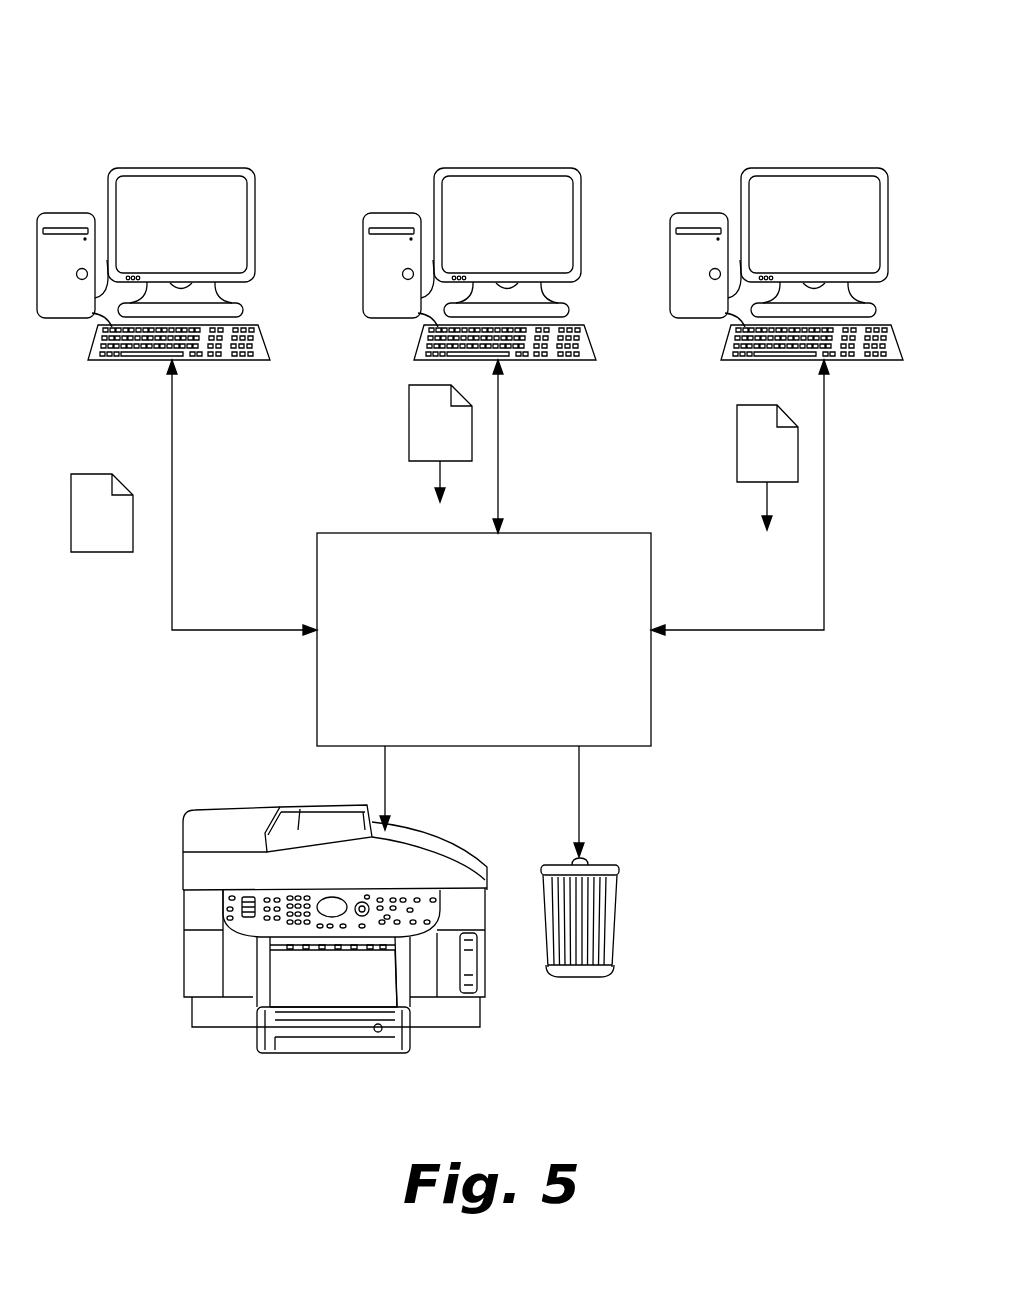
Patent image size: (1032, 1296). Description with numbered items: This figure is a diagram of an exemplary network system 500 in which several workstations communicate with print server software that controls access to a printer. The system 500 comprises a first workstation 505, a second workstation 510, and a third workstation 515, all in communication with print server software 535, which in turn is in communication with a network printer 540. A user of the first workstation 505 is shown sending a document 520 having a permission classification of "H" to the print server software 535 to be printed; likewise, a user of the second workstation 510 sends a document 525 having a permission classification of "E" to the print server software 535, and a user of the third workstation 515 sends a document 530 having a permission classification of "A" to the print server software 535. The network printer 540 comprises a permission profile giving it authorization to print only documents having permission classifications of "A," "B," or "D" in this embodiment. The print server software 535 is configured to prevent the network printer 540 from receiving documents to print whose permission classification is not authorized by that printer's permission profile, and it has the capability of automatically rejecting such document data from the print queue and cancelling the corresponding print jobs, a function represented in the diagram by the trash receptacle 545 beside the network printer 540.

The system 500 is at (119, 66).
The first workstation 505 is at (217, 188).
The second workstation 510 is at (538, 193).
The third workstation 515 is at (833, 193).
The document 520 is at (100, 540).
The document 525 is at (425, 400).
The document 530 is at (757, 432).
The print server software 535 is at (639, 726).
The network printer 540 is at (213, 965).
The trash receptacle 545 is at (640, 936).